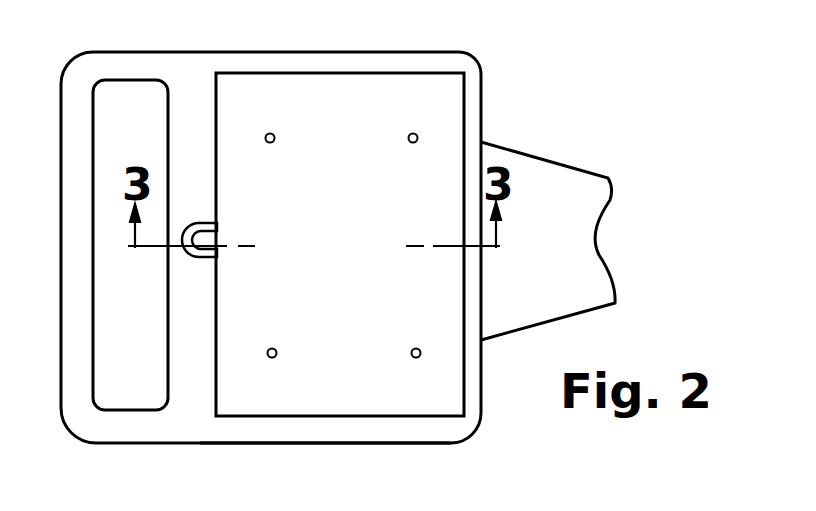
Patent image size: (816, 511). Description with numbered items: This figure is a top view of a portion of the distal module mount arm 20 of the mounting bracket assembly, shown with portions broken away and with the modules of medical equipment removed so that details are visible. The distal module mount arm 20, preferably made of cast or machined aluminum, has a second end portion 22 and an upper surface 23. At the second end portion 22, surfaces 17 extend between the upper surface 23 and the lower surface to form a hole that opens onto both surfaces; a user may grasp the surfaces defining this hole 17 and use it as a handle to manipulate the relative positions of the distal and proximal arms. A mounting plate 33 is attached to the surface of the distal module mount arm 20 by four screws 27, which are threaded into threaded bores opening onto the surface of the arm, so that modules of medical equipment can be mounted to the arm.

The surfaces forming a hole 17 is at (104, 336).
The distal module mount arm 20 is at (550, 162).
The second end portion 22 is at (340, 436).
The upper surface 23 is at (207, 58).
The screws 27 is at (277, 353).
The lower mounting plate 33 is at (392, 81).